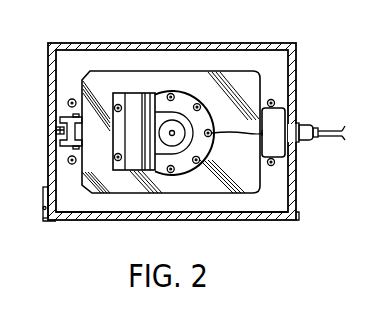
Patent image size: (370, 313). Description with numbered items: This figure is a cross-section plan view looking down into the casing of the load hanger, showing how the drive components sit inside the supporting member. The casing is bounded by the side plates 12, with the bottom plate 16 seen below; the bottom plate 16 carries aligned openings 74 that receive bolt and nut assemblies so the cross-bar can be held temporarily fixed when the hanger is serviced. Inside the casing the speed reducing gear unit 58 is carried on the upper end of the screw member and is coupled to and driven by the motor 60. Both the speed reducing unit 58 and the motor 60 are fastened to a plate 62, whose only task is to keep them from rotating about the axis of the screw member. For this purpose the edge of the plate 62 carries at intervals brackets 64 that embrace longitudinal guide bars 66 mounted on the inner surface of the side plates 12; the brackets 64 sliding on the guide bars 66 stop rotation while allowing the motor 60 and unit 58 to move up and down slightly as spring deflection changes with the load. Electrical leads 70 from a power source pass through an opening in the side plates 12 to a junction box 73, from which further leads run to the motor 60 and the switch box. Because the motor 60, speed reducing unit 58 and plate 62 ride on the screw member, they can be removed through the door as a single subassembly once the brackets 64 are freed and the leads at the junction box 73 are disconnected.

The side plates 12 is at (293, 178).
The bottom plate 16 is at (98, 204).
The speed reducing gear unit 58 is at (213, 132).
The motor 60 is at (176, 122).
The plate 62 is at (116, 73).
The brackets 64 is at (60, 118).
The longitudinal guide bars 66 is at (56, 131).
The electrical leads 70 is at (338, 130).
The junction box 73 is at (285, 122).
The aligned openings 74 is at (276, 101).